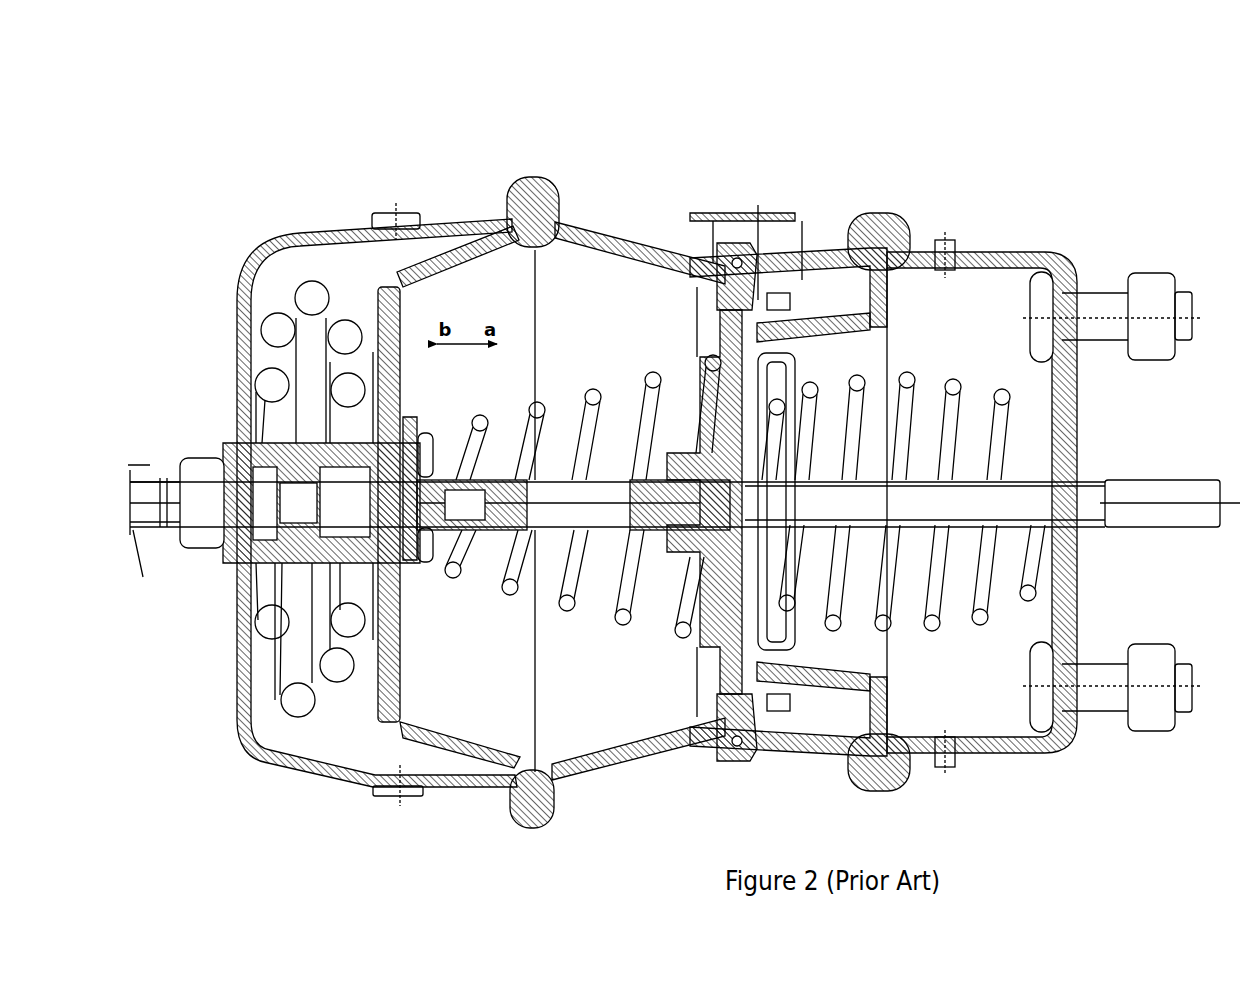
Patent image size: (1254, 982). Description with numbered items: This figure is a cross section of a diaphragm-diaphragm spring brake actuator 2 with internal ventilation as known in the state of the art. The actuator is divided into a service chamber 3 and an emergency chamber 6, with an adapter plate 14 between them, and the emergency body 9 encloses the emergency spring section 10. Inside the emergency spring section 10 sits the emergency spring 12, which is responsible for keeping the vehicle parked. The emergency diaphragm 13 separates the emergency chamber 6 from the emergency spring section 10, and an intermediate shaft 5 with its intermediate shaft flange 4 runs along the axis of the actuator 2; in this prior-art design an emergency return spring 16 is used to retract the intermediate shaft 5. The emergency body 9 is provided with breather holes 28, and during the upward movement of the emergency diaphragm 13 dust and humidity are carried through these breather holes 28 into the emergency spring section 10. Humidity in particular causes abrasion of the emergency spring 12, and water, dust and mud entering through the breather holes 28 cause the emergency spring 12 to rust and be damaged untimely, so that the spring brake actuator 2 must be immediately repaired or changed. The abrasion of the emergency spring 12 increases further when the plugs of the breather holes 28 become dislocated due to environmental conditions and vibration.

The diaphragm-diaphragm spring brake actuator 2 is at (1134, 178).
The service chamber 3 is at (838, 292).
The intermediate shaft flange 4 is at (410, 595).
The intermediate shaft 5 is at (485, 537).
The emergency chamber 6 is at (554, 266).
The emergency body 9 is at (340, 228).
The emergency spring section 10 is at (332, 262).
The emergency spring 12 is at (266, 327).
The emergency diaphragm 13 is at (467, 258).
The adapter plate 14 is at (661, 250).
The emergency return spring 16 is at (628, 630).
The emergency body breather holes 28 is at (392, 200).